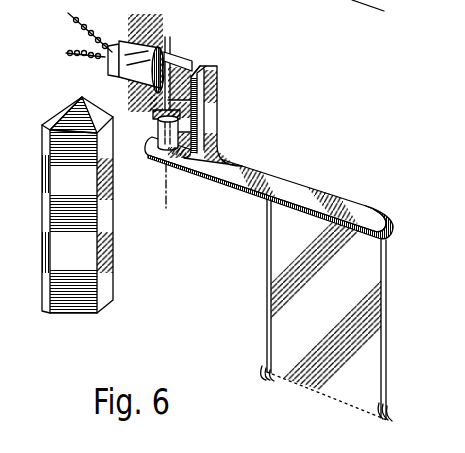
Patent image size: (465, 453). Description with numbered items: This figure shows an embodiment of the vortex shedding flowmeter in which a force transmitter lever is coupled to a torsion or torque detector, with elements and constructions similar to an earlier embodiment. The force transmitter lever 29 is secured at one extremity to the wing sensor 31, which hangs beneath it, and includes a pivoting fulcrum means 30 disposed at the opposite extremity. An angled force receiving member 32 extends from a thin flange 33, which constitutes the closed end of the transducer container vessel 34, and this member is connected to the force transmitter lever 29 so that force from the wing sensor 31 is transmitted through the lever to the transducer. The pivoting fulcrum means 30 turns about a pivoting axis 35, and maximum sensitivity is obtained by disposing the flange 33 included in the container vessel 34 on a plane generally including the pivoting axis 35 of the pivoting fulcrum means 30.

The force transmitter lever 29 is at (280, 192).
The pivoting fulcrum means 30 is at (147, 143).
The wing sensor 31 is at (320, 302).
The angled force receiving member 32 is at (204, 68).
The thin flange 33 is at (188, 66).
The transducer container vessel 34 is at (112, 60).
The pivoting axis 35 is at (167, 198).